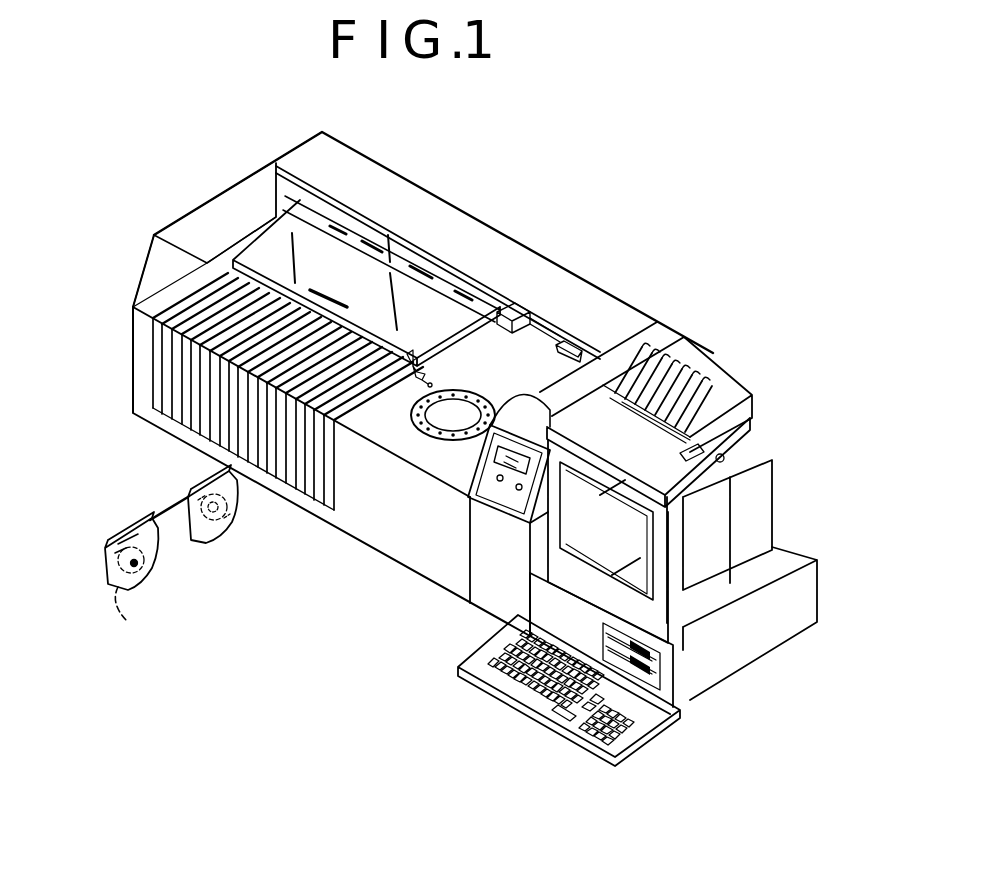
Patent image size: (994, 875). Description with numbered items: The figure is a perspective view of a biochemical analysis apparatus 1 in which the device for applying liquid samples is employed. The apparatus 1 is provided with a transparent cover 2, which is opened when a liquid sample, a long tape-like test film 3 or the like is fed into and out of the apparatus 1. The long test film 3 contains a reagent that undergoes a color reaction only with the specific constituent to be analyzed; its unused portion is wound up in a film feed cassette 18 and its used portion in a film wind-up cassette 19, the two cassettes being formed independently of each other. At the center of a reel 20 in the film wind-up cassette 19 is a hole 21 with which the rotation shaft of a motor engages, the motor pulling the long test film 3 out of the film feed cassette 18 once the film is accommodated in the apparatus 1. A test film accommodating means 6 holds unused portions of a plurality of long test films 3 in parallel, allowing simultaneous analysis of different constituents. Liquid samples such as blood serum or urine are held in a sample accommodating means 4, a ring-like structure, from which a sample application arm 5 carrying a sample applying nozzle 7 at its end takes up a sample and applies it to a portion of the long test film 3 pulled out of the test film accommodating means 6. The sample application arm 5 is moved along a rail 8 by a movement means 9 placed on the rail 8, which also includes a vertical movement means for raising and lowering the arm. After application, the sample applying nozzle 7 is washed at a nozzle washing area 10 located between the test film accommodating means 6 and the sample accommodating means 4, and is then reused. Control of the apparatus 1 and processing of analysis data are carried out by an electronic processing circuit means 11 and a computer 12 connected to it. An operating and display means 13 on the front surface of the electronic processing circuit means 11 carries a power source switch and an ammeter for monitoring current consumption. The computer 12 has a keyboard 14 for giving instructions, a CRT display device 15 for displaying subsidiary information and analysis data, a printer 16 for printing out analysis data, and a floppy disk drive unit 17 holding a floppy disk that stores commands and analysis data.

The biochemical analysis apparatus 1 is at (476, 196).
The transparent cover 2 is at (225, 207).
The long tape-like test film 3 is at (167, 514).
The sample accommodating means 4 is at (557, 423).
The sample application arm 5 is at (443, 330).
The test film accommodating means 6 is at (329, 248).
The sample applying nozzle 7 is at (412, 372).
The rail 8 is at (547, 333).
The movement means 9 is at (533, 303).
The nozzle washing area 10 is at (420, 380).
The electronic processing circuit means 11 is at (480, 602).
The computer 12 is at (803, 433).
The operating and display means 13 is at (505, 496).
The keyboard 14 is at (473, 680).
The CRT display device 15 is at (652, 566).
The printer 16 is at (713, 420).
The floppy disk drive unit 17 is at (673, 643).
The film feed cassette 18 is at (211, 487).
The film wind-up cassette 19 is at (115, 540).
The reel 20 is at (127, 622).
The hole 21 is at (137, 565).